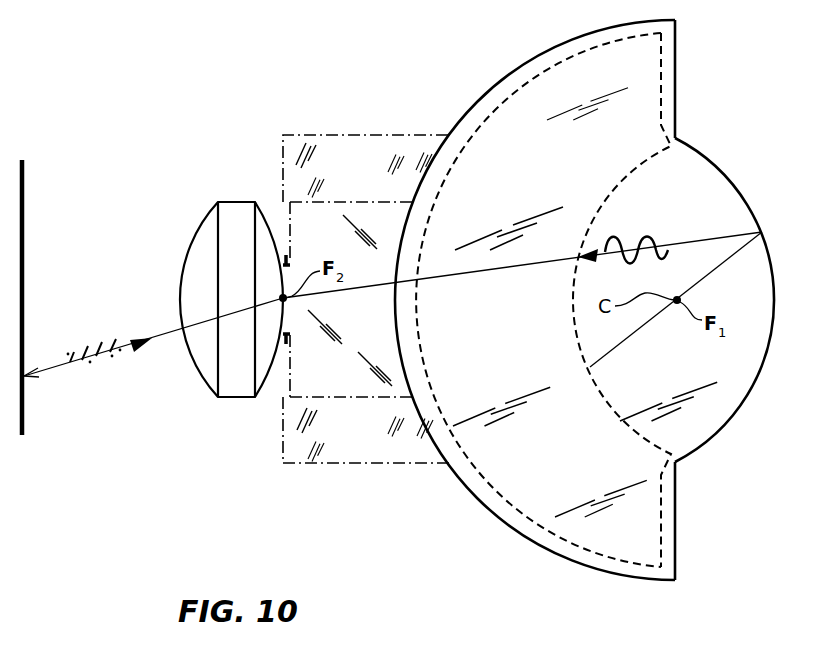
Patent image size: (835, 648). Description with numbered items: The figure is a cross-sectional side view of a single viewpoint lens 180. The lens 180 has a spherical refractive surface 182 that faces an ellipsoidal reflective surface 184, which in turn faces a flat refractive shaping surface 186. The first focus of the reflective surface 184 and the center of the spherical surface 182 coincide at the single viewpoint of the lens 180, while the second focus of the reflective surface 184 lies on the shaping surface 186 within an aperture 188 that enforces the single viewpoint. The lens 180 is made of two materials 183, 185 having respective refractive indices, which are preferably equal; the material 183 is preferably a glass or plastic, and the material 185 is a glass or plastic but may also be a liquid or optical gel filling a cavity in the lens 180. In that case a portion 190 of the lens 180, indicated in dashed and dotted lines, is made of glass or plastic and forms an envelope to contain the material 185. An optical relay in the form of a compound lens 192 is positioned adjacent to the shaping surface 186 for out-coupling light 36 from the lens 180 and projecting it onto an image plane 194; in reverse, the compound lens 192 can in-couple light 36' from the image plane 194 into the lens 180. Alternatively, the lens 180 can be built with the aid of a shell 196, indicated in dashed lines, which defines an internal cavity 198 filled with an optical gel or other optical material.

The single viewpoint lens 180 is at (178, 70).
The spherical refractive surface 182 is at (460, 116).
The material 183 is at (572, 463).
The ellipsoidal reflective surface 184 is at (737, 183).
The material 185 is at (375, 323).
The flat refractive shaping surface 186 is at (286, 340).
The aperture 188 is at (286, 260).
The portion 190 is at (360, 169).
The compound lens 192 is at (186, 256).
The image plane 194 is at (22, 437).
The shell 196 is at (537, 65).
The internal cavity 198 is at (633, 125).
The light 36 is at (636, 229).
The light 36' is at (109, 326).